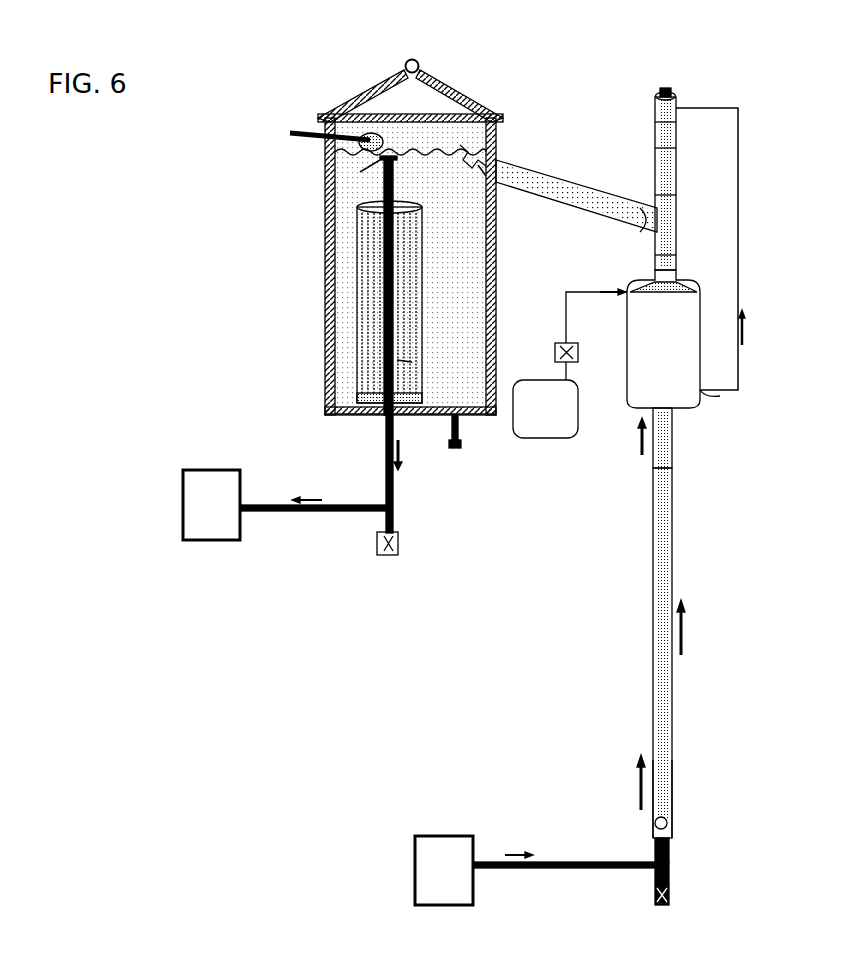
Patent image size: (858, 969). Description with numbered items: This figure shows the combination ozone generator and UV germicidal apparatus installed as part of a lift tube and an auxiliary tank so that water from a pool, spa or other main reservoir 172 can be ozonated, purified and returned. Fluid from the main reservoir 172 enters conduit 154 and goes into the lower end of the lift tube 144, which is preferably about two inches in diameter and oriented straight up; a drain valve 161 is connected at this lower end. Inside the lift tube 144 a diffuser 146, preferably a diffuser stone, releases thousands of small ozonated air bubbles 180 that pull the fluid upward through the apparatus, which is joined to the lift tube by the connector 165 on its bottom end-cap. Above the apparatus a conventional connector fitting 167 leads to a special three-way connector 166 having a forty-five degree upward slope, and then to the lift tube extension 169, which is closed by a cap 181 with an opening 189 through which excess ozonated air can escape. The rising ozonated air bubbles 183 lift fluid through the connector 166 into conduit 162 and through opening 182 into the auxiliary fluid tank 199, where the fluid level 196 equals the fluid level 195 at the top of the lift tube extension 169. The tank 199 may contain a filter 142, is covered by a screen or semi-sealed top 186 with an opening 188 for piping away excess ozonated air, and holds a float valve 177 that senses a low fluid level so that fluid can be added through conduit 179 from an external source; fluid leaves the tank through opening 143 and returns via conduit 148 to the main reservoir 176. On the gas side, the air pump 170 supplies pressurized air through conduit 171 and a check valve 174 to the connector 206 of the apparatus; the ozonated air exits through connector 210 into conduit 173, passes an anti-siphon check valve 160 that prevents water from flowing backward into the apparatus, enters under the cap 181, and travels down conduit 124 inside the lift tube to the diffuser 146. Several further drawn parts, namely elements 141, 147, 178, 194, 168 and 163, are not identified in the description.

The opening 188 is at (413, 58).
The semi-sealed top 186 is at (388, 82).
The conduit 179 is at (302, 132).
The float valve 177 is at (383, 139).
The rising ozonated air bubbles 183 is at (466, 154).
The fluid level 196 is at (333, 151).
The central pipe 141 is at (395, 160).
The opening 182 is at (480, 178).
The conduit 162 is at (562, 204).
The auxiliary fluid tank 199 is at (326, 230).
The filter 142 is at (422, 265).
The filter media 147 is at (412, 362).
The opening 143 is at (380, 416).
The conduit 148 is at (385, 447).
The drain 178 is at (455, 443).
The main reservoir 176 is at (182, 478).
The valve 194 is at (393, 553).
The cap 181 is at (660, 93).
The opening 189 is at (668, 92).
The pipe joint 168 is at (656, 123).
The fluid level 195 is at (656, 147).
The conduit 124 is at (676, 165).
The lift tube extension 169 is at (676, 194).
The three-way connector 166 is at (655, 233).
The connector fitting 167 is at (676, 256).
The conduit 173 is at (739, 232).
The connector 206 is at (620, 290).
The conduit 171 is at (562, 308).
The check valve 174 is at (570, 346).
The air pump 170 is at (551, 450).
The anti-siphon check valve 160 is at (700, 405).
The connector 210 is at (720, 396).
The connector 165 is at (672, 420).
The lift tube 144 is at (673, 704).
The ozonated air bubbles 180 is at (666, 772).
The diffuser 146 is at (665, 818).
The inlet fitting 163 is at (654, 858).
The drain valve 161 is at (669, 895).
The conduit 154 is at (510, 870).
The main reservoir 172 is at (450, 906).